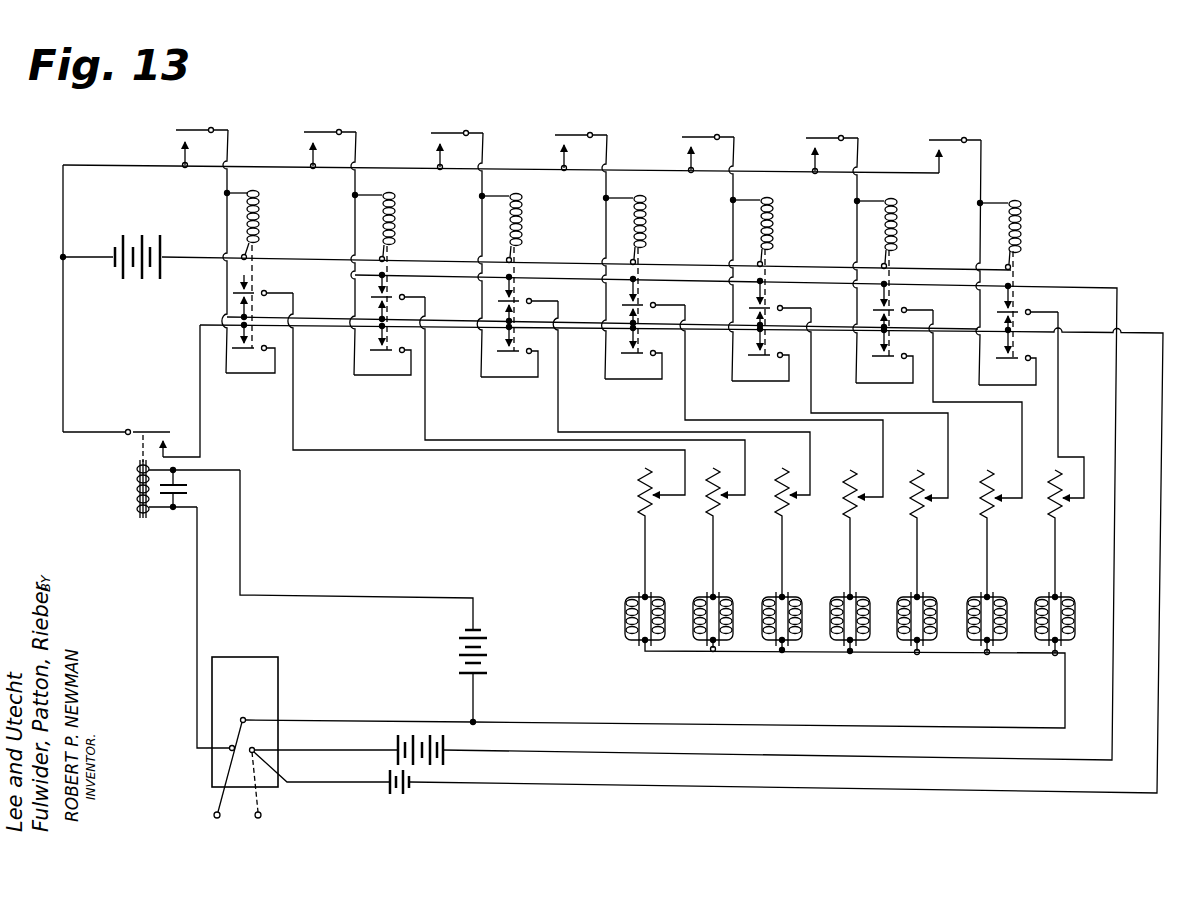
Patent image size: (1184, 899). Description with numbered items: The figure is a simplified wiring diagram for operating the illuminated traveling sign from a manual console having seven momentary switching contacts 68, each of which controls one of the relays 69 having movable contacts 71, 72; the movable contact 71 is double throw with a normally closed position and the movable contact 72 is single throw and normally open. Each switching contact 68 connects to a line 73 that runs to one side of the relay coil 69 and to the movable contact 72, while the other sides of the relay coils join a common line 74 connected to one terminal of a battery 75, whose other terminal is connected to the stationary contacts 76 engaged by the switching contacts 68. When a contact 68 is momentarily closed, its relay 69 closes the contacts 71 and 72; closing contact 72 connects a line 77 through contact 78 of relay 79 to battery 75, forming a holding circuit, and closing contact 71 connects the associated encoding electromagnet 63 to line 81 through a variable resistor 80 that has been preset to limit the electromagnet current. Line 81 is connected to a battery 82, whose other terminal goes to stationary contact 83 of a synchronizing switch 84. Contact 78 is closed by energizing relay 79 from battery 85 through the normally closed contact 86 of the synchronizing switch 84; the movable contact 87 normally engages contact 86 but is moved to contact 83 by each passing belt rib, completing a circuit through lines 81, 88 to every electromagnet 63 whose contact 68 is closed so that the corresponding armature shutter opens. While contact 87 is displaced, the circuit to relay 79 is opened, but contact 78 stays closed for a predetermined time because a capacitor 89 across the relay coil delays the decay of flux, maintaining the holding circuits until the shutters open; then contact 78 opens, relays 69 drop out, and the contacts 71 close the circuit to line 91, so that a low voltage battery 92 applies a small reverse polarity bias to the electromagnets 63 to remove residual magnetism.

The encoding electromagnet 63 is at (622, 614).
The momentary switching contact 68 is at (191, 127).
The relay 69 is at (260, 226).
The movable contact 71 is at (235, 293).
The movable contact 72 is at (247, 377).
The line 73 is at (227, 222).
The common line 74 is at (268, 258).
The battery 75 is at (136, 283).
The stationary contact 76 is at (183, 147).
The line 77 is at (311, 331).
The contact 78 is at (151, 430).
The relay 79 is at (137, 490).
The variable resistor 80 is at (639, 494).
The line 81 is at (309, 284).
The battery 82 is at (455, 748).
The stationary contact 83 is at (256, 750).
The synchronizing switch 84 is at (283, 690).
The battery 85 is at (490, 656).
The normally closed contact 86 is at (231, 717).
The movable contact 87 is at (222, 796).
The line 88 is at (645, 727).
The capacitor 89 is at (182, 485).
The line 91 is at (460, 316).
The low voltage battery 92 is at (407, 794).